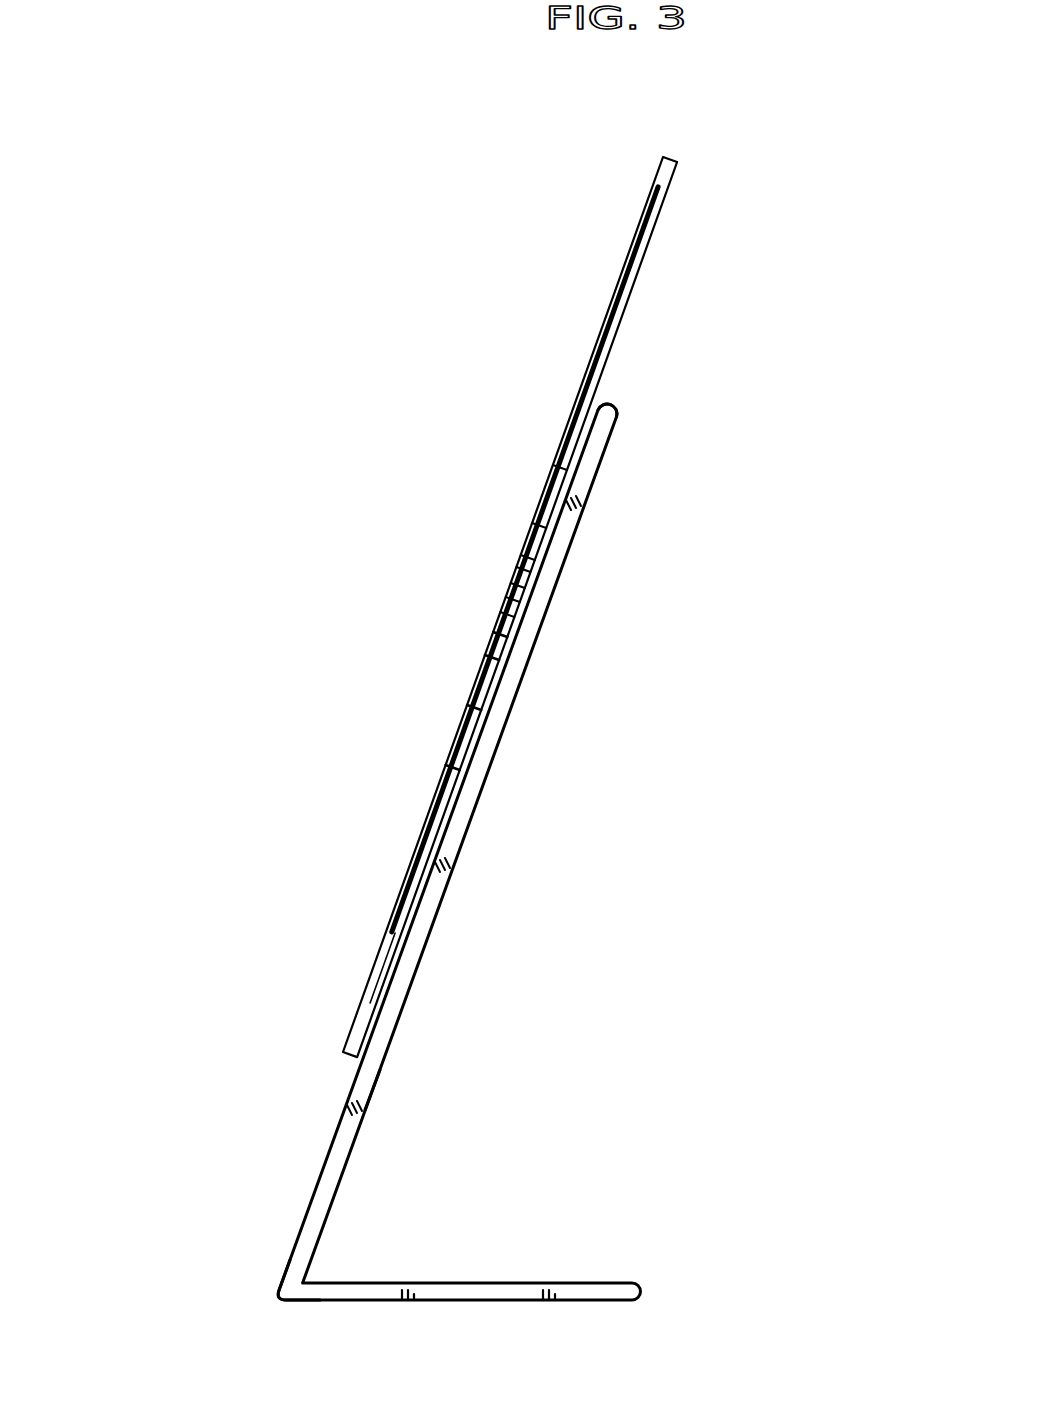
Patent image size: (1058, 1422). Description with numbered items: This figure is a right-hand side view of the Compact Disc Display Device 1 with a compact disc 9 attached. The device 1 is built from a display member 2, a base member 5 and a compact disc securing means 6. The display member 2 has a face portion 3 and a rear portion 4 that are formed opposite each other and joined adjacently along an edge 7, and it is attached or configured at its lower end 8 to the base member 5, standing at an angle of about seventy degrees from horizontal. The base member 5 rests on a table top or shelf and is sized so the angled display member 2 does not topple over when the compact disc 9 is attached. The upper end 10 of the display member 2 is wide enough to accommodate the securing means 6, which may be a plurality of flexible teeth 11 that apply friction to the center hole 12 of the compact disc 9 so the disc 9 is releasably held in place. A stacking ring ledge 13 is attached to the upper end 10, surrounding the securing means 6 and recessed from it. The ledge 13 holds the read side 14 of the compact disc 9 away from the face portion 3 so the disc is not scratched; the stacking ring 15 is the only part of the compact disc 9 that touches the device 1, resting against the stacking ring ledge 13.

The Compact Disc Display Device 1 is at (626, 377).
The display member 2 is at (535, 720).
The face portion 3 is at (345, 1095).
The rear portion 4 is at (444, 943).
The base member 5 is at (487, 1265).
The compact disc securing means 6 is at (485, 601).
The edge 7 is at (370, 1093).
The lower end 8 is at (283, 1250).
The compact disc 9 is at (602, 258).
The upper end 10 is at (625, 432).
The flexible teeth 11 is at (475, 627).
The center hole 12 is at (510, 550).
The stacking ring ledge 13 is at (543, 580).
The read side 14 is at (657, 243).
The stacking ring 15 is at (520, 522).